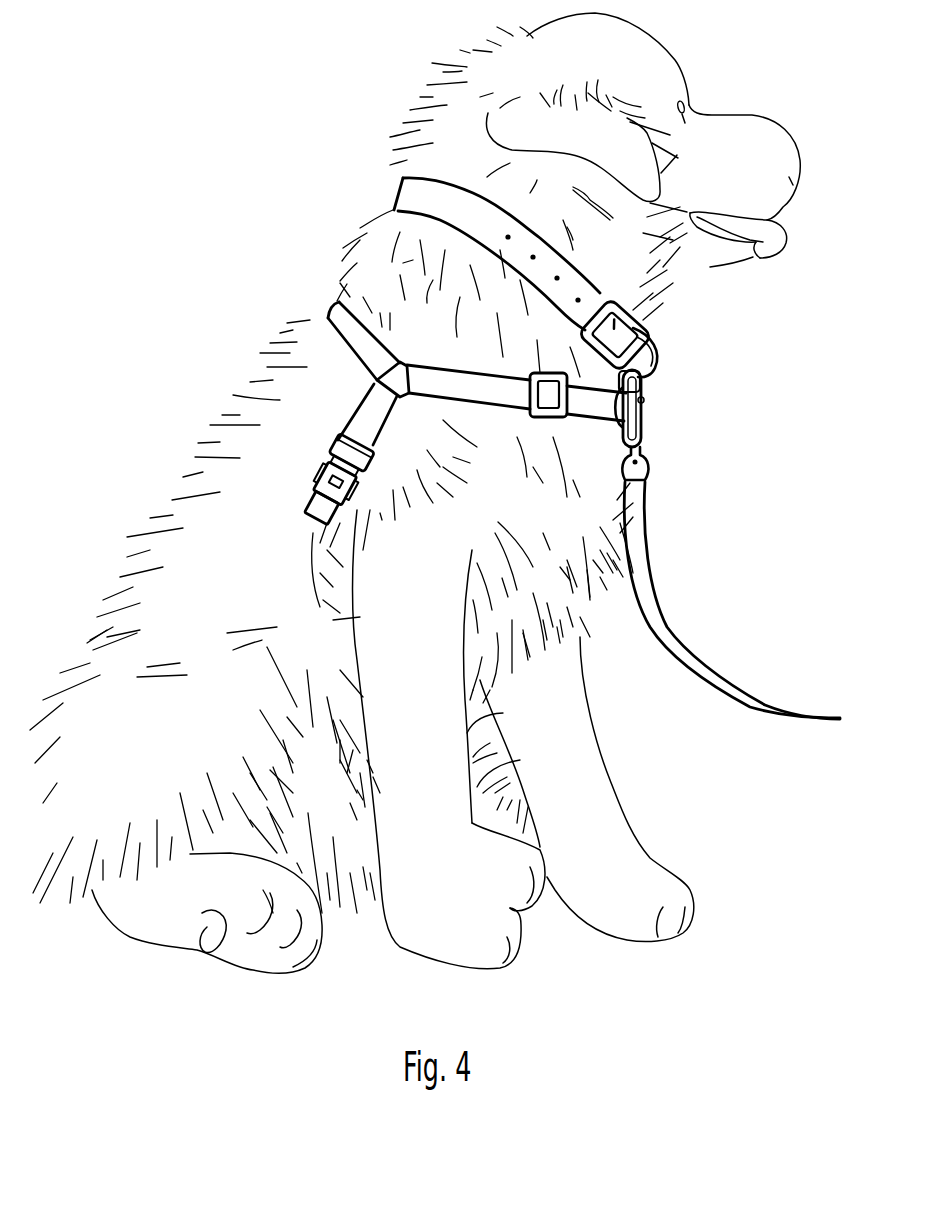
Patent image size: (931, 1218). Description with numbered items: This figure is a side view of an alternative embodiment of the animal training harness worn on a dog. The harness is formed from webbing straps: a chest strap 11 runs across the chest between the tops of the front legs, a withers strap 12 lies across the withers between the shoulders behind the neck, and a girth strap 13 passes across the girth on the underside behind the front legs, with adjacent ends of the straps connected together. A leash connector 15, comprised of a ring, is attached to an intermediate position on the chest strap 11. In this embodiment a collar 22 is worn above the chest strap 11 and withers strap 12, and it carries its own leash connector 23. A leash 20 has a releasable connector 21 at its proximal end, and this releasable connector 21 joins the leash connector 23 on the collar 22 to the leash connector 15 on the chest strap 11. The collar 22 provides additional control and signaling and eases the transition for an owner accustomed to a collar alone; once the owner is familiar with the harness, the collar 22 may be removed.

The chest strap 11 is at (497, 398).
The withers strap 12 is at (355, 343).
The girth strap 13 is at (358, 420).
The leash connector 15 is at (627, 420).
The leash 20 is at (655, 617).
The releasable connector 21 is at (641, 420).
The collar 22 is at (459, 195).
The leash connector 23 is at (655, 360).